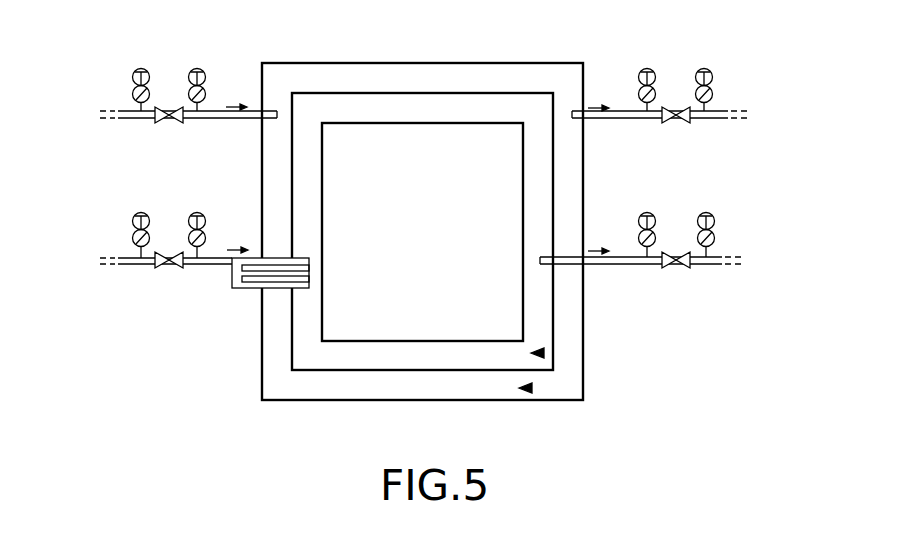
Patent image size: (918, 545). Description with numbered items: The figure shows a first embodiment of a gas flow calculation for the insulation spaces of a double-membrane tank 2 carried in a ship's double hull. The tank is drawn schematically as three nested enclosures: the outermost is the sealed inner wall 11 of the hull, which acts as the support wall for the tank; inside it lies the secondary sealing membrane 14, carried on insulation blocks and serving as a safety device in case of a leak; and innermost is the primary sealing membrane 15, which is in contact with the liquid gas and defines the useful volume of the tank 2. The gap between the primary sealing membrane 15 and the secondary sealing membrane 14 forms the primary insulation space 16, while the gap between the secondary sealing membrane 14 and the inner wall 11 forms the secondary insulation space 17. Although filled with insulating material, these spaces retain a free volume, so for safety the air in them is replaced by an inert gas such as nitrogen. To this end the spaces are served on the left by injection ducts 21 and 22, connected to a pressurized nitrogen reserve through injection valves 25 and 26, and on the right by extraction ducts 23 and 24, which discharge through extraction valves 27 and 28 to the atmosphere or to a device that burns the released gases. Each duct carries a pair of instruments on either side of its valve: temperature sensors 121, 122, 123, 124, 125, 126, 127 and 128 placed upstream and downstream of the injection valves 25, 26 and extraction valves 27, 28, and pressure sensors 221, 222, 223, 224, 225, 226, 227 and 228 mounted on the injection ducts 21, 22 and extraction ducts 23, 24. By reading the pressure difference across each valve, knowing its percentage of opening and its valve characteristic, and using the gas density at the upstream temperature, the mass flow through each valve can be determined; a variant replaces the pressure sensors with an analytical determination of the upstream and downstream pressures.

The double-membrane tank 2 is at (424, 247).
The inner wall 11 is at (292, 400).
The secondary sealing membrane 14 is at (368, 370).
The primary sealing membrane 15 is at (422, 340).
The primary insulation space 16 is at (541, 354).
The secondary insulation space 17 is at (531, 388).
The injection duct 21 is at (236, 290).
The injection duct 22 is at (245, 119).
The extraction duct 23 is at (605, 265).
The extraction duct 24 is at (605, 119).
The injection valve 25 is at (170, 268).
The injection valve 26 is at (171, 123).
The extraction valve 27 is at (678, 268).
The extraction valve 28 is at (676, 123).
The temperature sensor 121 is at (197, 212).
The temperature sensor 122 is at (197, 68).
The temperature sensor 123 is at (647, 212).
The temperature sensor 124 is at (647, 68).
The temperature sensor 125 is at (141, 212).
The temperature sensor 126 is at (141, 68).
The temperature sensor 127 is at (706, 212).
The temperature sensor 128 is at (704, 68).
The pressure sensor 221 is at (206, 238).
The pressure sensor 222 is at (206, 94).
The pressure sensor 223 is at (638, 238).
The pressure sensor 224 is at (638, 94).
The pressure sensor 225 is at (132, 238).
The pressure sensor 226 is at (132, 94).
The pressure sensor 227 is at (715, 238).
The pressure sensor 228 is at (713, 94).